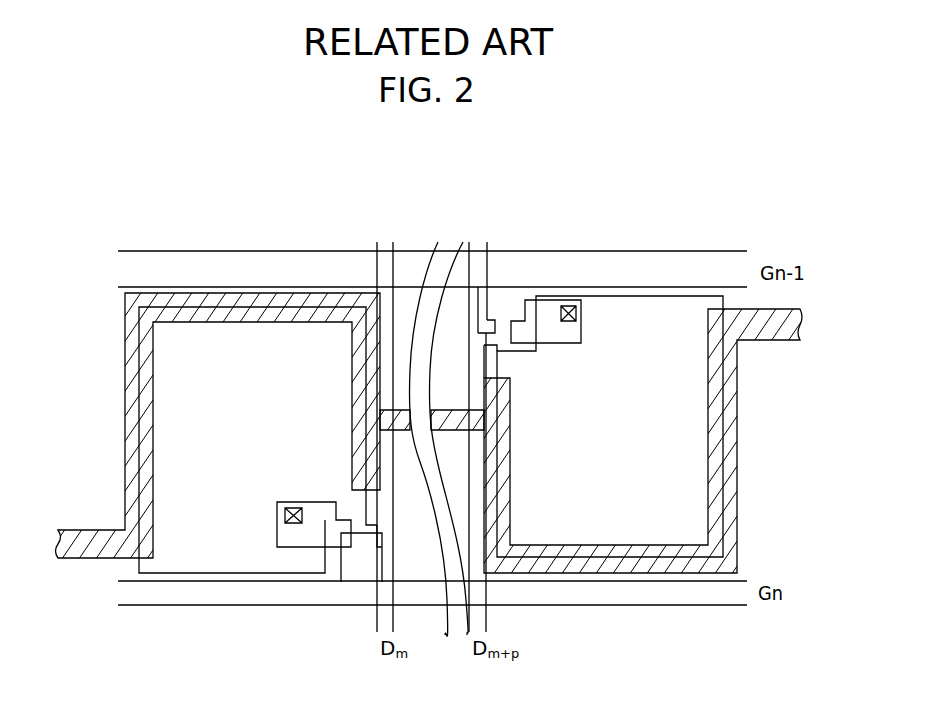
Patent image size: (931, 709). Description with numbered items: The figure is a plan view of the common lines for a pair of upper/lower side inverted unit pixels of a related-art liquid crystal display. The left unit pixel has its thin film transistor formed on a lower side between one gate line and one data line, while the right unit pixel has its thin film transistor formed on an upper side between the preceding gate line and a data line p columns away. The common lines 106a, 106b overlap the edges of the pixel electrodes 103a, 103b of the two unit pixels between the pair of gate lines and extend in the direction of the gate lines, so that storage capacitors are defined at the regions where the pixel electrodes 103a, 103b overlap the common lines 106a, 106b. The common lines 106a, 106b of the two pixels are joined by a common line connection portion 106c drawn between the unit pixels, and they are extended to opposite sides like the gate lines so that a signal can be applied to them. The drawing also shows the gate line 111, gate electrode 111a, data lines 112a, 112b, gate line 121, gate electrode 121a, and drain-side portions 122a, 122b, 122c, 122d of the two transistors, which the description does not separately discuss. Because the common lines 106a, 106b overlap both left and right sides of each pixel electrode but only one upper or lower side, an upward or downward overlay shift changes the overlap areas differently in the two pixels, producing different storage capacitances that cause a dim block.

The pixel electrode 103a is at (140, 468).
The pixel electrode 103b is at (725, 385).
The common line 106a is at (125, 410).
The common line 106b is at (738, 453).
The common line connection portion 106c is at (407, 430).
The gate line 111 is at (218, 598).
The gate electrode 111a is at (340, 548).
The data line 112a is at (396, 272).
The data line 112b is at (488, 250).
The gate line 121 is at (613, 262).
The gate electrode 121a is at (502, 333).
The drain electrode 122a is at (371, 547).
The drain contact 122b is at (303, 502).
The drain electrode 122c is at (496, 322).
The drain contact 122d is at (545, 346).